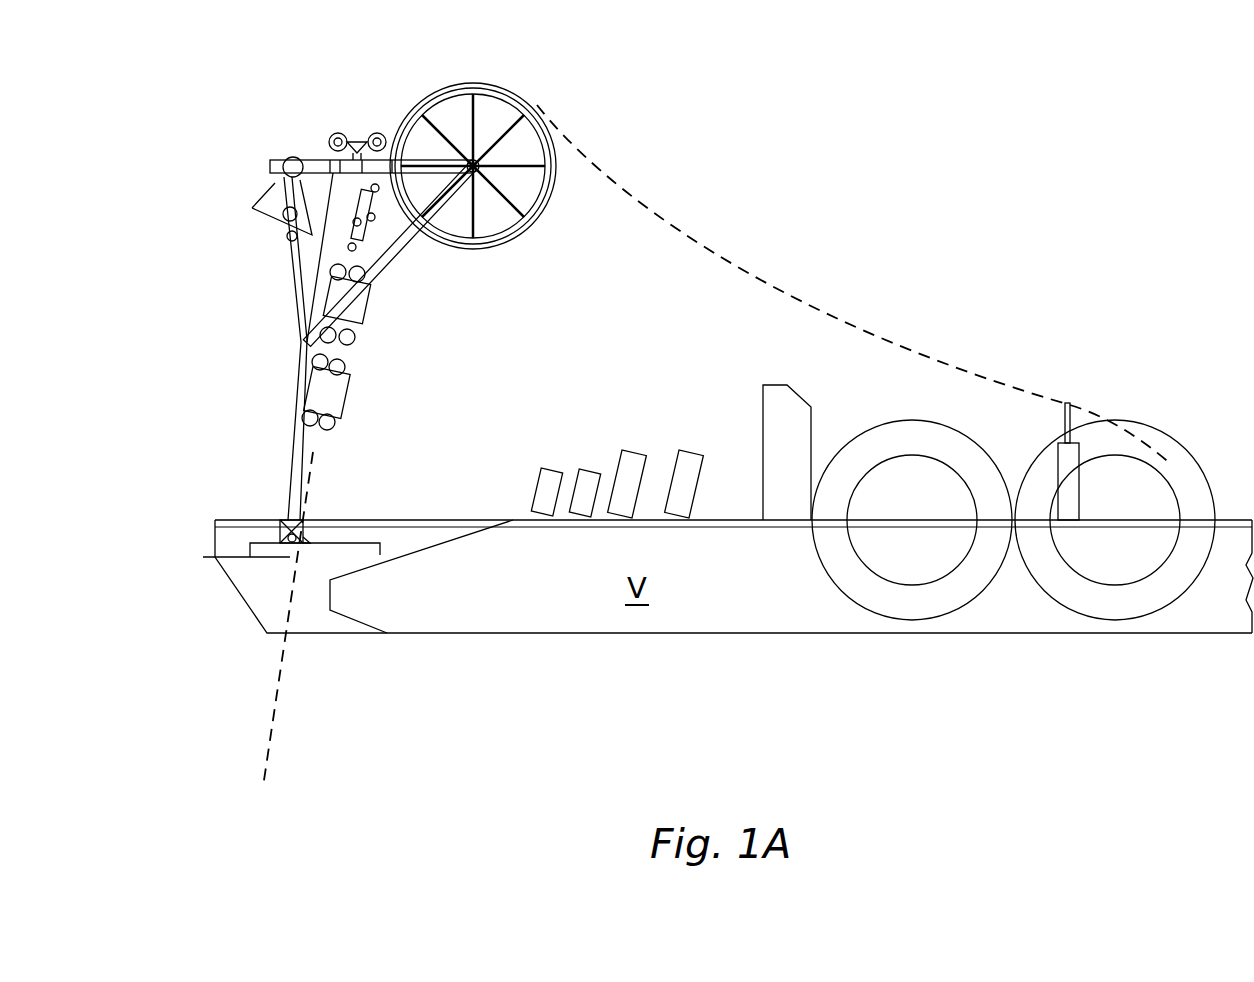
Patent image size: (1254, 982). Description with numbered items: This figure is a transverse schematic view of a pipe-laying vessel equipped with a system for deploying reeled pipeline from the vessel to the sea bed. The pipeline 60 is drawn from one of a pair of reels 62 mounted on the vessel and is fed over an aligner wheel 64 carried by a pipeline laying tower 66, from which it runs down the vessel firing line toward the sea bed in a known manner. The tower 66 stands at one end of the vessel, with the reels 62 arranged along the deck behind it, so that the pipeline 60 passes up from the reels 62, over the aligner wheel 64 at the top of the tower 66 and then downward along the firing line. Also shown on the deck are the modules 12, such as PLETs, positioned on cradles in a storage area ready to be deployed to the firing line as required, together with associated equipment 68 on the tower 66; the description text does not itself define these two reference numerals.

The instrument containers 12 is at (693, 465).
The pipeline 60 is at (833, 313).
The reels 62 is at (910, 607).
The aligner wheel 64 is at (535, 215).
The pipeline laying tower 66 is at (233, 278).
The roller guide assembly 68 is at (352, 312).